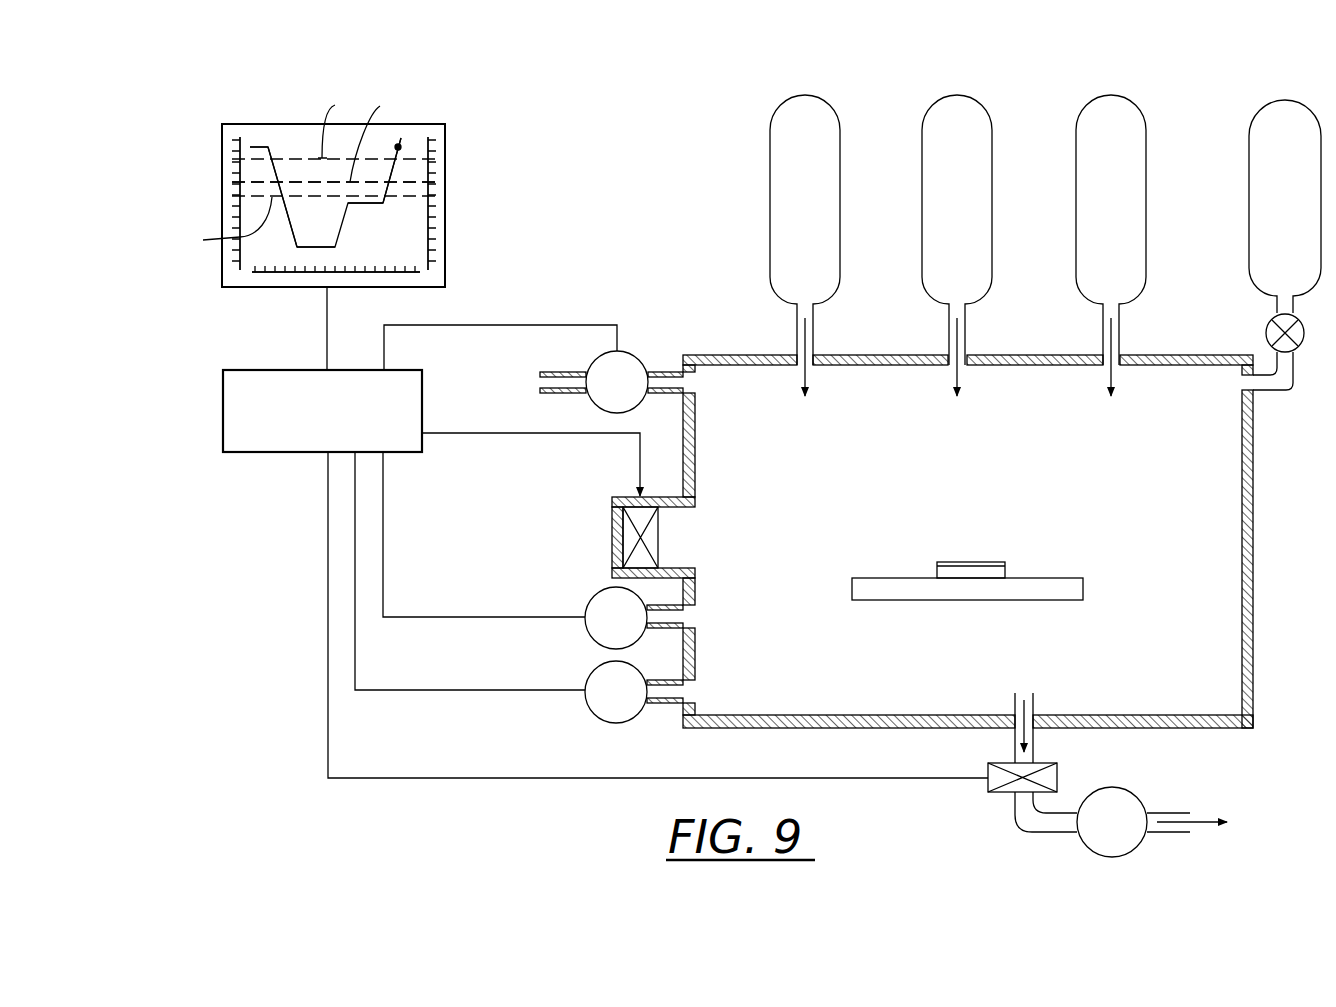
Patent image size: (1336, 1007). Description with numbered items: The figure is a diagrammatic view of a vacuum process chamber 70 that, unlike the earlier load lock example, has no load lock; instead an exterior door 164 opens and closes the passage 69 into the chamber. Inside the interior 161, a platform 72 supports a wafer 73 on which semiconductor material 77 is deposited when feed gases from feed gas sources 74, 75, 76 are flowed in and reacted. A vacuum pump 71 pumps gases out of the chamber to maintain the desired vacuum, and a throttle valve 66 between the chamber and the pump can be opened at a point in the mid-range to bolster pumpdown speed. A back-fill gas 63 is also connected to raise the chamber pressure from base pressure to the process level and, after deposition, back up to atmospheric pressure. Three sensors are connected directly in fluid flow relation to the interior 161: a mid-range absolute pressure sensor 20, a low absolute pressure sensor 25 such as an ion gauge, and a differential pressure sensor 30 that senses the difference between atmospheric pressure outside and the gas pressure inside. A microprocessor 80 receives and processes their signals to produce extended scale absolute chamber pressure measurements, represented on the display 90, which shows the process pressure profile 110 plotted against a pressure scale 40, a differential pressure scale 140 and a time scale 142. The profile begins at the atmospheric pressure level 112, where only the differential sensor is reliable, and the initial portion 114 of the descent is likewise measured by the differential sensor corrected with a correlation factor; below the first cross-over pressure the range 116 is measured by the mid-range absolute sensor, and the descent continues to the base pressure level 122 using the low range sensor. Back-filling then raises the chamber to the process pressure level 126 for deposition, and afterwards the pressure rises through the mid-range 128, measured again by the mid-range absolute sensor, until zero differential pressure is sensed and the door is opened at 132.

The display 90 is at (240, 121).
The pressure level 112 is at (258, 148).
The initial portion 114 is at (276, 172).
The range 116 is at (291, 165).
The pressure scale 40 is at (233, 163).
The base pressure level 122 is at (305, 247).
The time scale 142 is at (303, 276).
The process pressure level 126 is at (367, 203).
The mid-range 128 is at (396, 173).
The process pressure profile 110 is at (398, 173).
The door opening point 132 is at (398, 147).
The differential pressure scale 140 is at (437, 145).
The microprocessor 80 is at (280, 370).
The differential pressure sensor 30 is at (584, 360).
The exterior door 164 is at (612, 527).
The low absolute pressure sensor 25 is at (594, 598).
The absolute pressure sensor 20 is at (597, 671).
The passage 69 is at (686, 548).
The interior 161 is at (1130, 472).
The feed gas source 74 is at (773, 113).
The feed gas source 75 is at (927, 112).
The feed gas source 76 is at (1088, 103).
The back-fill gas 63 is at (1257, 106).
The vacuum process chamber 70 is at (1192, 352).
The platform 72 is at (1073, 578).
The wafer 73 is at (1007, 574).
The semiconductor material 77 is at (977, 561).
The throttle valve 66 is at (1000, 797).
The vacuum pump 71 is at (1137, 792).